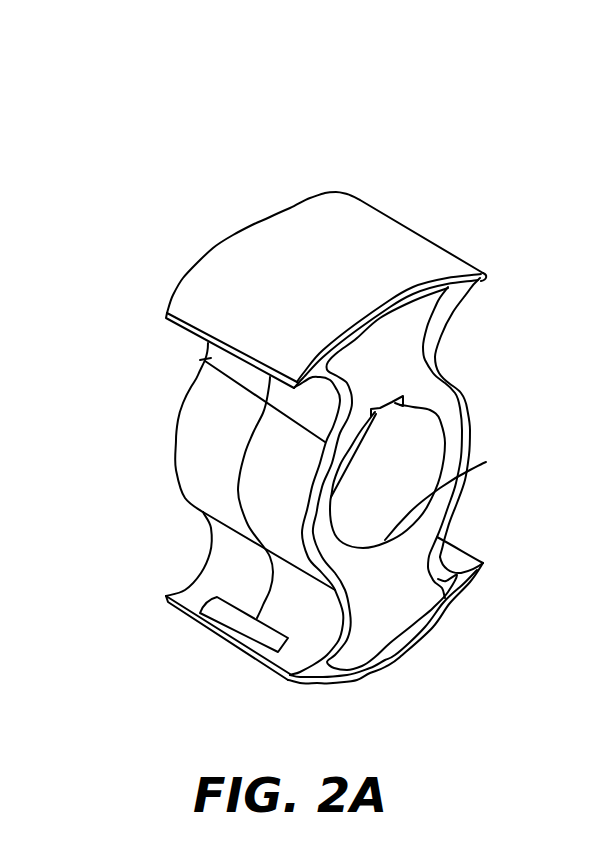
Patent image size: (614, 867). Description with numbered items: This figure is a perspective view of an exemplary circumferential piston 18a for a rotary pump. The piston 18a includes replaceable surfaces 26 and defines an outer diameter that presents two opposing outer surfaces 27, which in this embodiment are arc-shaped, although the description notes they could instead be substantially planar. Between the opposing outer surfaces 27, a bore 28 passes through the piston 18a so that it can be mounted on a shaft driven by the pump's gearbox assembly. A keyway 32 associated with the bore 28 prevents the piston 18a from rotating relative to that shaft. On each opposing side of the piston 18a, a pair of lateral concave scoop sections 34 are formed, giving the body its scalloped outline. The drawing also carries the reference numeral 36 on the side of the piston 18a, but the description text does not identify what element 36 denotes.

The piston 18a is at (305, 119).
The replaceable surfaces 26 is at (207, 210).
The outer surfaces 27 is at (485, 279).
The bore 28 is at (395, 491).
The keyway 32 is at (404, 405).
The lateral concave scoop sections 34 is at (201, 360).
The side band 36 is at (153, 425).